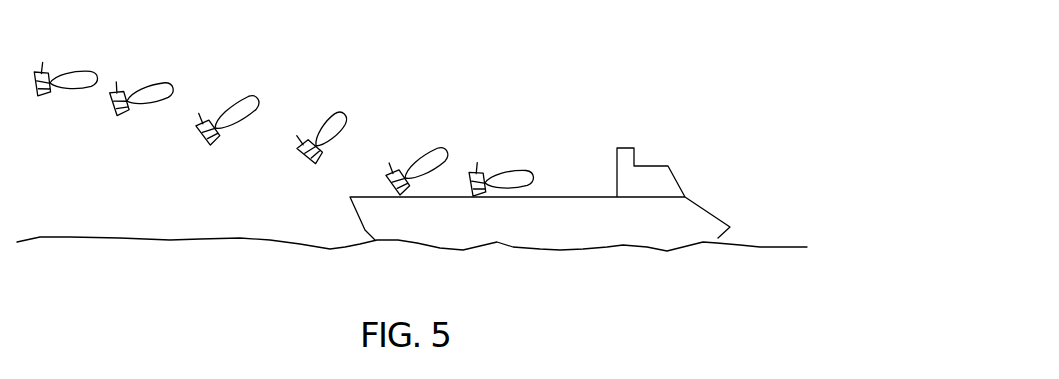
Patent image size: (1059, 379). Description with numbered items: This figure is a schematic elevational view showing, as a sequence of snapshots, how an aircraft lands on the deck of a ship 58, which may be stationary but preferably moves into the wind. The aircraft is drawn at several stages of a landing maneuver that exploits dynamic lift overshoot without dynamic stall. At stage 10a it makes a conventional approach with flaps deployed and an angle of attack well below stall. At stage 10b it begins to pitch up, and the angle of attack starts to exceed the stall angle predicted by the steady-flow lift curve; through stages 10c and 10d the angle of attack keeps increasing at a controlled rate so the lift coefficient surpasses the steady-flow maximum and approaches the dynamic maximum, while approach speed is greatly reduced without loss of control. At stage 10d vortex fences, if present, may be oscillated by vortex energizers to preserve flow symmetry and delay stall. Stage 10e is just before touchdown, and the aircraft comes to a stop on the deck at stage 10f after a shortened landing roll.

The stage 10a (conventional approach) 10a is at (70, 73).
The stage 10b (pitch-up begins) 10b is at (158, 81).
The stage 10c (angle of attack increasing) 10c is at (248, 99).
The stage 10d (further pitch-up) 10d is at (333, 112).
The stage 10e (just before touchdown) 10e is at (430, 148).
The stage 10f (aircraft stopped) 10f is at (512, 162).
The ship 58 is at (602, 228).